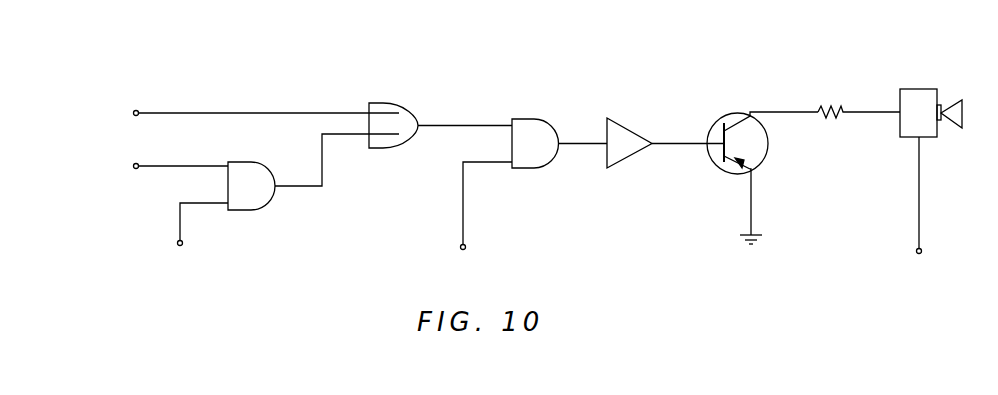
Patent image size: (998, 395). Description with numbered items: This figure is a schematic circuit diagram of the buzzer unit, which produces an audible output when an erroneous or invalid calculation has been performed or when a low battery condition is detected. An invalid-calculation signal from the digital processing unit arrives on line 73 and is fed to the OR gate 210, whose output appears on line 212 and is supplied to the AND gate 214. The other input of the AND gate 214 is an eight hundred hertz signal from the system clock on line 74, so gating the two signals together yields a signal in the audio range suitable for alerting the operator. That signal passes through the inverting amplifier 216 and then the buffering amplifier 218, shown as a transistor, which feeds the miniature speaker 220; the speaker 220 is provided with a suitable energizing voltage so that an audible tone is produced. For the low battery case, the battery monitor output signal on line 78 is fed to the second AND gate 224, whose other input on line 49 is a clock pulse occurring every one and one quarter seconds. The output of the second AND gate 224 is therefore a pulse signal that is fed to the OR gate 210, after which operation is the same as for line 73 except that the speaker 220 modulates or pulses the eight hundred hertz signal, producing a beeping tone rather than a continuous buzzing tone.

The line 73 is at (156, 111).
The line 78 is at (188, 164).
The line 49 is at (181, 232).
The second AND gate 224 is at (240, 161).
The OR gate 210 is at (398, 106).
The line 212 is at (447, 123).
The line 74 is at (463, 221).
The AND gate 214 is at (527, 118).
The inverting amplifier 216 is at (618, 118).
The buffering amplifier 218 is at (723, 118).
The miniature speaker 220 is at (913, 89).